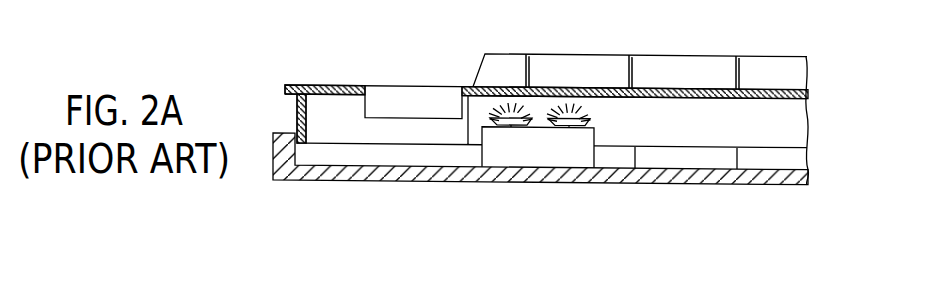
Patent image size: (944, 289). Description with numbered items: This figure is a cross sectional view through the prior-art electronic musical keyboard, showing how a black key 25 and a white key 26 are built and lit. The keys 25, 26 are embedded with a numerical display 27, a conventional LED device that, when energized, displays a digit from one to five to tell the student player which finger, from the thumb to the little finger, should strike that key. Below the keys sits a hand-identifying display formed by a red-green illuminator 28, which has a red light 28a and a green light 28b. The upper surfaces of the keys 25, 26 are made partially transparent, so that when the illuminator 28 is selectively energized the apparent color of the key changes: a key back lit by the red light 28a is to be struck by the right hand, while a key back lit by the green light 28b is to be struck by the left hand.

The black key 25 is at (598, 60).
The white key 26 is at (337, 85).
The numerical display 27 is at (455, 88).
The red-green illuminator 28 is at (488, 148).
The red light 28a is at (509, 125).
The green light 28b is at (568, 125).